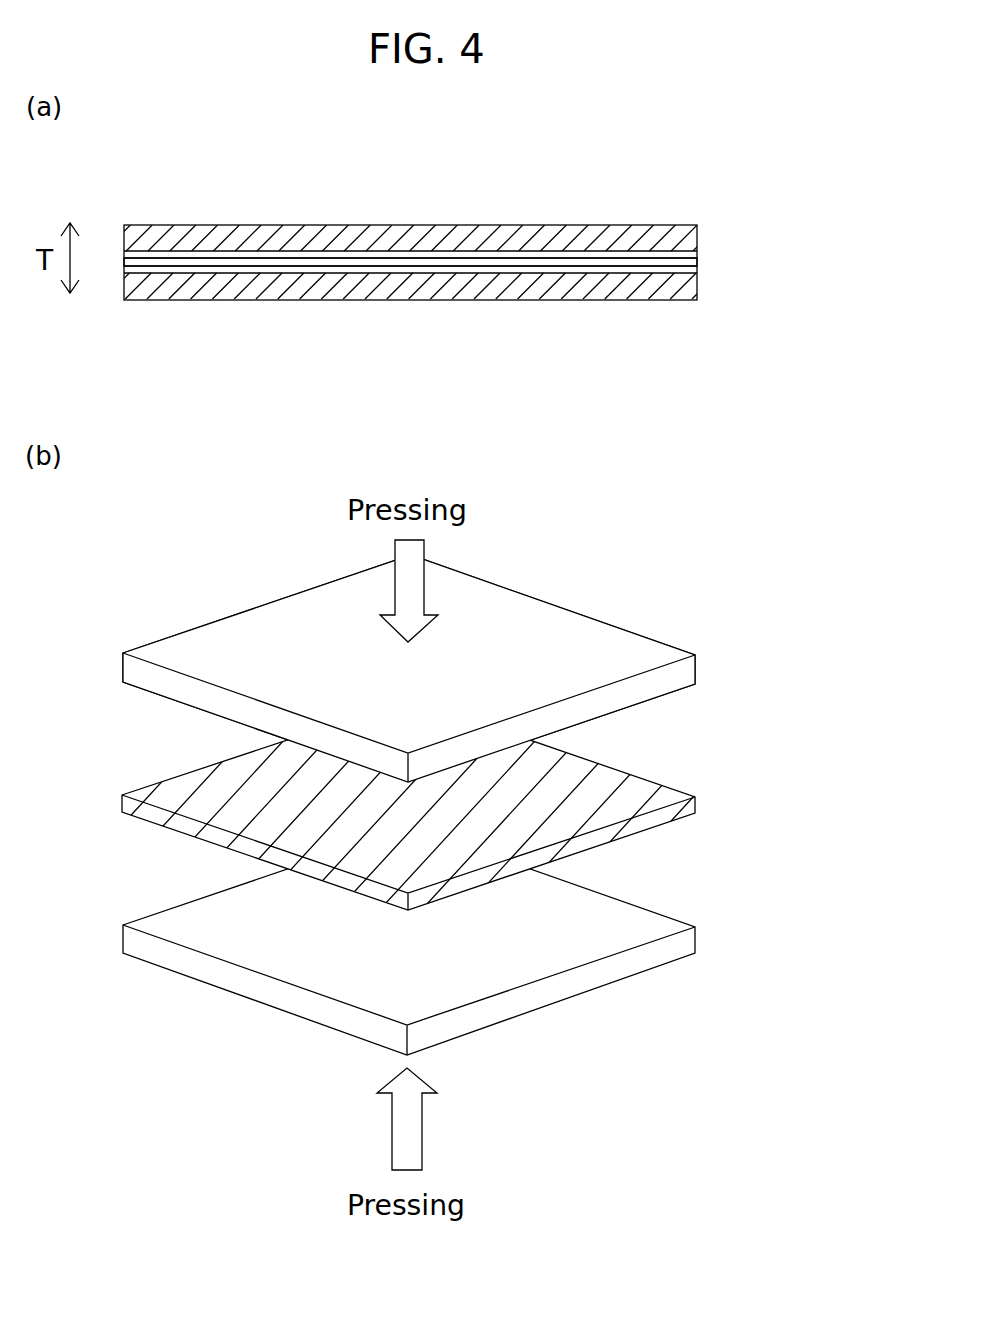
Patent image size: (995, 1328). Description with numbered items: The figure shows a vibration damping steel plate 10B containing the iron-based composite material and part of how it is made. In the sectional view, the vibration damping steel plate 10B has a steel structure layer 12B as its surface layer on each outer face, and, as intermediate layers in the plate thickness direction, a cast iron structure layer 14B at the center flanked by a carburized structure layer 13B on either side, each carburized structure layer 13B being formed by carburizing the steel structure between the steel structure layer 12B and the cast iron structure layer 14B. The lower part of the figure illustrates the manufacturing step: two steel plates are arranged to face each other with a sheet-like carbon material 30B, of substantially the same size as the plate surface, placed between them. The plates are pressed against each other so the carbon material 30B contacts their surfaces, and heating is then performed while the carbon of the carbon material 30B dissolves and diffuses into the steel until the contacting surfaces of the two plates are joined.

The vibration damping steel plate 10B is at (783, 172).
The steel structure layer 12B is at (698, 227).
The carburized structure layer 13B is at (698, 254).
The cast iron structure layer 14B is at (698, 262).
The carbon material 30B is at (698, 803).